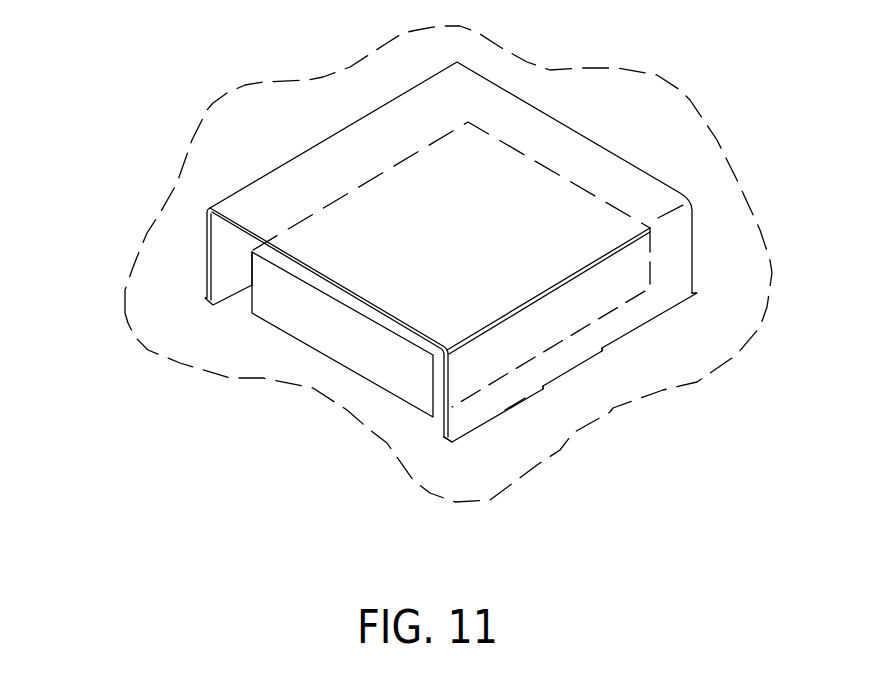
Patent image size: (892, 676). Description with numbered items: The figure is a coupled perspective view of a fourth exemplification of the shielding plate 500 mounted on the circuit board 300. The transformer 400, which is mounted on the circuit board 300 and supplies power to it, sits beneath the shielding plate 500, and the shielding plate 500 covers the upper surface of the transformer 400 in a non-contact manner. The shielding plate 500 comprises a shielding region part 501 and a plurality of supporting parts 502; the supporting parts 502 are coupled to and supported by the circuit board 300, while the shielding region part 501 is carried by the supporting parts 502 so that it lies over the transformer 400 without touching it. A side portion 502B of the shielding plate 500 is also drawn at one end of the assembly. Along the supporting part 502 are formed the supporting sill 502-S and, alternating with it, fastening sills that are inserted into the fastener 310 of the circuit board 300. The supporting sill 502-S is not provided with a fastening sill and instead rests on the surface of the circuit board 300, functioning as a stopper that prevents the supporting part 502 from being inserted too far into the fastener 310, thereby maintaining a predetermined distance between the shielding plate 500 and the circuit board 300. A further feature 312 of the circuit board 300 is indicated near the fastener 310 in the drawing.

The circuit board 300 is at (413, 437).
The fastener 310 is at (465, 452).
The circuit board 312 is at (515, 405).
The transformer 400 is at (323, 323).
The shielding plate 500 is at (414, 257).
The shielding region part 501 is at (628, 180).
The supporting part 502 is at (640, 310).
The bent end portion 502B is at (223, 257).
The supporting sill 502-S is at (575, 367).